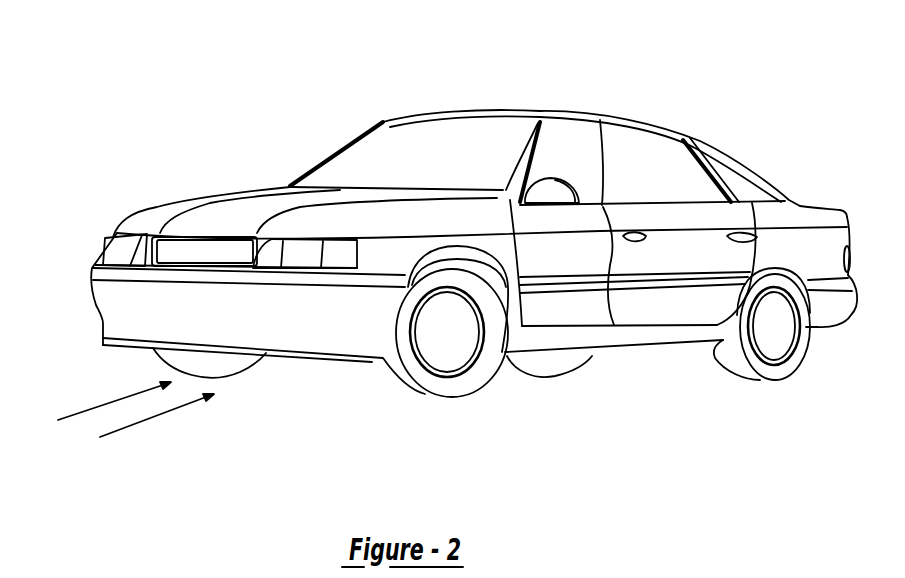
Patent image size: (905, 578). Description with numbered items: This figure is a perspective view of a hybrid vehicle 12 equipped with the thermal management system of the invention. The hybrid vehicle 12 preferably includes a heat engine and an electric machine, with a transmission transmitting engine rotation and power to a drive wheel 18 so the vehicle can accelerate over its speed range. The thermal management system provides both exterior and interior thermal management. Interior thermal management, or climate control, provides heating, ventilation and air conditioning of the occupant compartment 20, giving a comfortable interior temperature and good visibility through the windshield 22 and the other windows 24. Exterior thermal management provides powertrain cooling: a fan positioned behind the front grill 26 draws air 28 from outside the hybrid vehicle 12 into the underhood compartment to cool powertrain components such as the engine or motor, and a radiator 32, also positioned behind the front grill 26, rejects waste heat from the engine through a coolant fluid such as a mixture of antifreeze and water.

The hybrid vehicle 12 is at (792, 160).
The drive wheel 18 is at (465, 392).
The occupant compartment 20 is at (553, 162).
The windshield 22 is at (328, 160).
The windows 24 is at (588, 338).
The front grill 26 is at (210, 250).
The air 28 is at (160, 415).
The radiator 32 is at (345, 204).